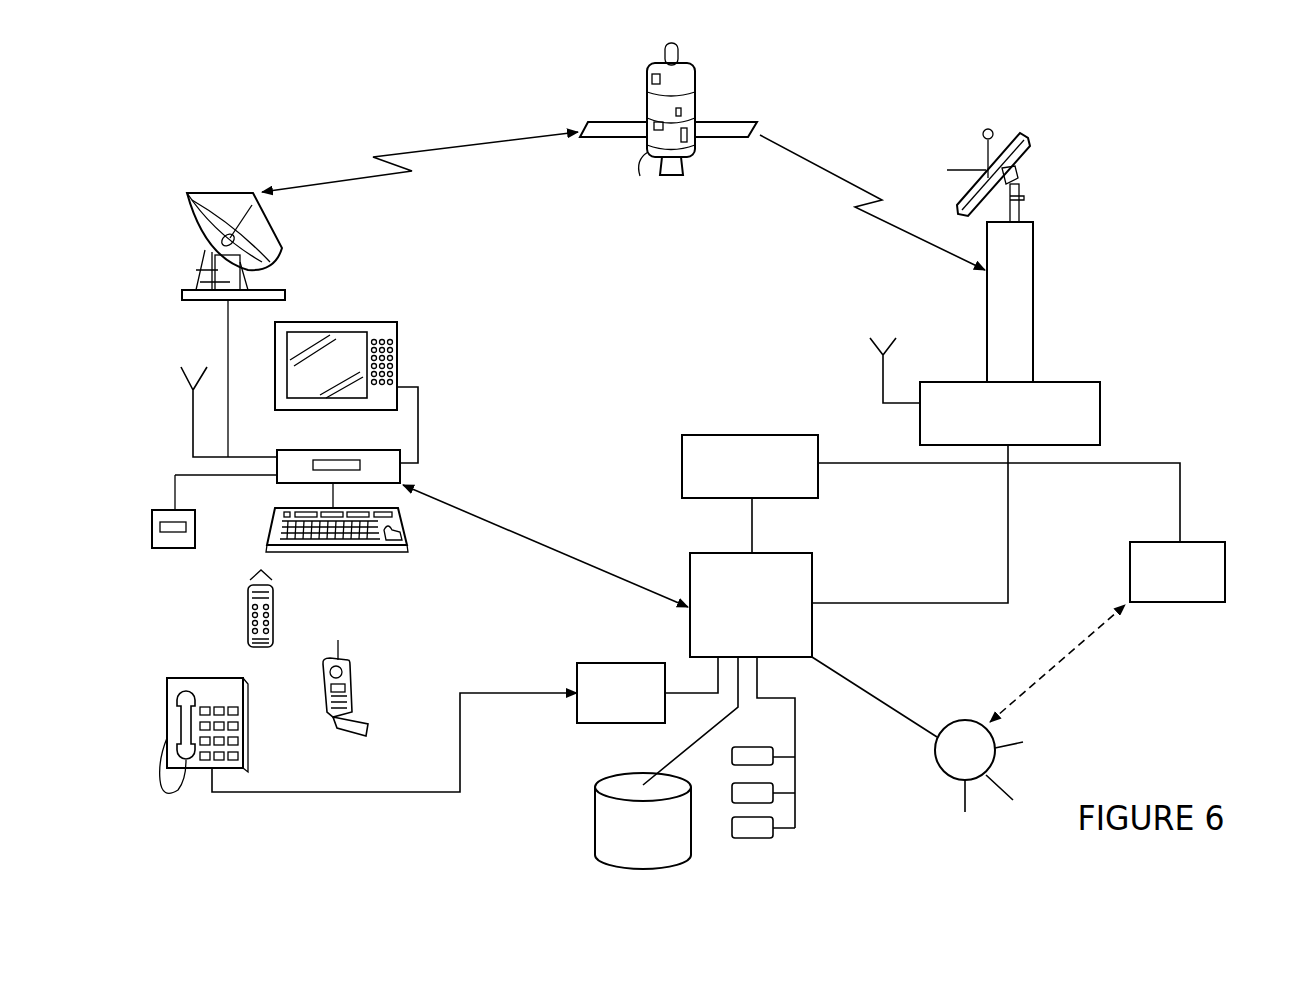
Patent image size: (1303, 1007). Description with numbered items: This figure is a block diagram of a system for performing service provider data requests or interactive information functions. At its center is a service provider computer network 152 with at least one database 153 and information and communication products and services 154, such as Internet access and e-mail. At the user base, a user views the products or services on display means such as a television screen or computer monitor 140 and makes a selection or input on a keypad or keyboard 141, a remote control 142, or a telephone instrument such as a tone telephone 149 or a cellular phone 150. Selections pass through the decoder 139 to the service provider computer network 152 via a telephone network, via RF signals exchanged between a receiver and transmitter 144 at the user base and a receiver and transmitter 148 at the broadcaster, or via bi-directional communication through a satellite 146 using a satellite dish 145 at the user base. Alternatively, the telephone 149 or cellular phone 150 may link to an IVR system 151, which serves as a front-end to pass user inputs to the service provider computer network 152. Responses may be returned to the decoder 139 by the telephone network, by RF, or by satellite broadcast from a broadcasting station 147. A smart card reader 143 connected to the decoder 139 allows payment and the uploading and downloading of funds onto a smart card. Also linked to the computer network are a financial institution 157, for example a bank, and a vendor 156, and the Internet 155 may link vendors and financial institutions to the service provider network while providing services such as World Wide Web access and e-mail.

The decoder 139 is at (403, 472).
The computer monitor 140 is at (350, 352).
The keyboard 141 is at (380, 548).
The remote control 142 is at (274, 617).
The smart card reader 143 is at (195, 528).
The receiver and transmitter at user base 144 is at (187, 350).
The satellite dish at user base 145 is at (202, 205).
The satellite 146 is at (668, 125).
The broadcasting station 147 is at (1100, 418).
The receiver and transmitter at broadcaster 148 is at (893, 348).
The tone telephone 149 is at (250, 742).
The cellular phone 150 is at (351, 698).
The IVR system 151 is at (612, 663).
The service provider computer network 152 is at (810, 553).
The database 153 is at (600, 810).
The information and communication products and services 154 is at (808, 785).
The Internet 155 is at (1005, 767).
The vendor 156 is at (1225, 572).
The financial institution 157 is at (740, 435).